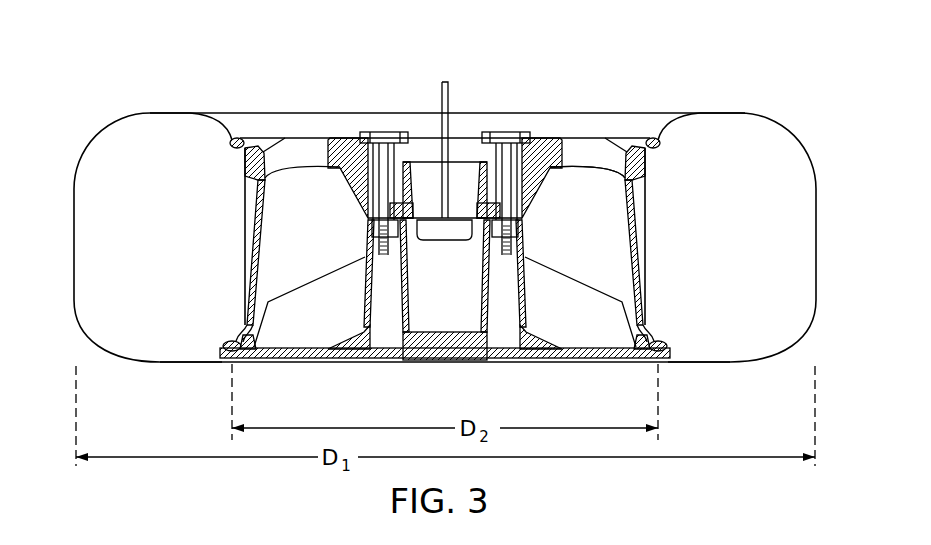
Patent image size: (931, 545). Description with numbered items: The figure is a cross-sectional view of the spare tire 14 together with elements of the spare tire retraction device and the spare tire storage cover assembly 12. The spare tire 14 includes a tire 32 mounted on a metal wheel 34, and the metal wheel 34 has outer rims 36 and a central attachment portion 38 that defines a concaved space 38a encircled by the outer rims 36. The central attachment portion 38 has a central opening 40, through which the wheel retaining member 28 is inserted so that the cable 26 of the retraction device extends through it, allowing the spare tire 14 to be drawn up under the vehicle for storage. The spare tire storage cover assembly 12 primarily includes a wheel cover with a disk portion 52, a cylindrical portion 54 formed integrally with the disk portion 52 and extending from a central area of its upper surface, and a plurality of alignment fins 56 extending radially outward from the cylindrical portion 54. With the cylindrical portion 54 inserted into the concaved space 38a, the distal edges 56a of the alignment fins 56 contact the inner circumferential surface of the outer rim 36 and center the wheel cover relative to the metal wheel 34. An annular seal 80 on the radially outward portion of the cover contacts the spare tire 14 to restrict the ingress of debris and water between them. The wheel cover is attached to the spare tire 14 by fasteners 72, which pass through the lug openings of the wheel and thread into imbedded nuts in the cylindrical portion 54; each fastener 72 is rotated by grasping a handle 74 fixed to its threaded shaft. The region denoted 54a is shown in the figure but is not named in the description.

The spare tire storage cover assembly 12 is at (604, 368).
The spare tire 14 is at (620, 108).
The cable 26 is at (449, 97).
The wheel retaining member 28 is at (436, 243).
The tire 32 is at (140, 327).
The metal wheel 34 is at (289, 160).
The outer rims 36 is at (241, 138).
The central attachment portion 38 is at (533, 177).
The concaved space 38a is at (588, 218).
The central opening 40 is at (410, 188).
The disk portion 52 is at (551, 363).
The cylindrical portion 54 is at (528, 288).
The housing 54a is at (505, 308).
The alignment fins 56 is at (327, 300).
The distal edges 56a is at (263, 313).
The fasteners 72 is at (372, 167).
The handles 74 is at (384, 170).
The annular seal 80 is at (236, 345).